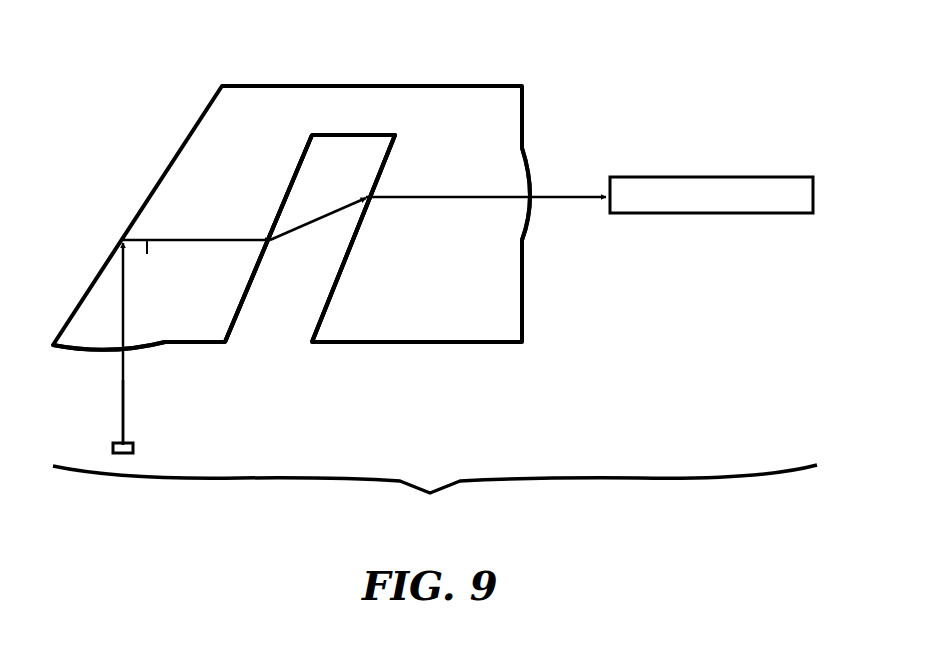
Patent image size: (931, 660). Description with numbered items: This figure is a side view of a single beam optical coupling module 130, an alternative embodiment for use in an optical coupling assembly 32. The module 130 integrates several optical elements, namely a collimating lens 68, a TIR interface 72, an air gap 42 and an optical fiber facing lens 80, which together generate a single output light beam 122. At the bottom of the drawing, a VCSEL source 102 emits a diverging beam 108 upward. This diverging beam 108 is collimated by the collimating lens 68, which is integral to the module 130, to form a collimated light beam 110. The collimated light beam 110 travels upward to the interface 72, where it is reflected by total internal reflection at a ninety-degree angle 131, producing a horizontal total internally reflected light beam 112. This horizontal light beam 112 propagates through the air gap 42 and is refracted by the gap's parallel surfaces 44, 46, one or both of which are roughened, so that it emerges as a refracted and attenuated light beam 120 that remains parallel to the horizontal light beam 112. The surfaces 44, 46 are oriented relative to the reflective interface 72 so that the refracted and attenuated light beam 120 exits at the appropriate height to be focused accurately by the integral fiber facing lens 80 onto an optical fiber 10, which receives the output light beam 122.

The optical fiber 10 is at (711, 176).
The optical coupling assembly 32 is at (435, 497).
The air gap 42 is at (289, 335).
The parallel surface 44 is at (241, 330).
The parallel surface 46 is at (326, 296).
The collimating lens 68 is at (100, 352).
The TIR interface 72 is at (195, 144).
The optical fiber facing lens 80 is at (532, 232).
The VCSEL source 102 is at (136, 449).
The diverging beam 108 is at (125, 402).
The collimated light beam 110 is at (125, 310).
The horizontal total internally reflected light beam 112 is at (198, 236).
The refracted and attenuated light beam 120 is at (444, 190).
The output light beam 122 is at (562, 190).
The optical coupling module 130 is at (315, 214).
The 90-degree angle 131 is at (150, 254).